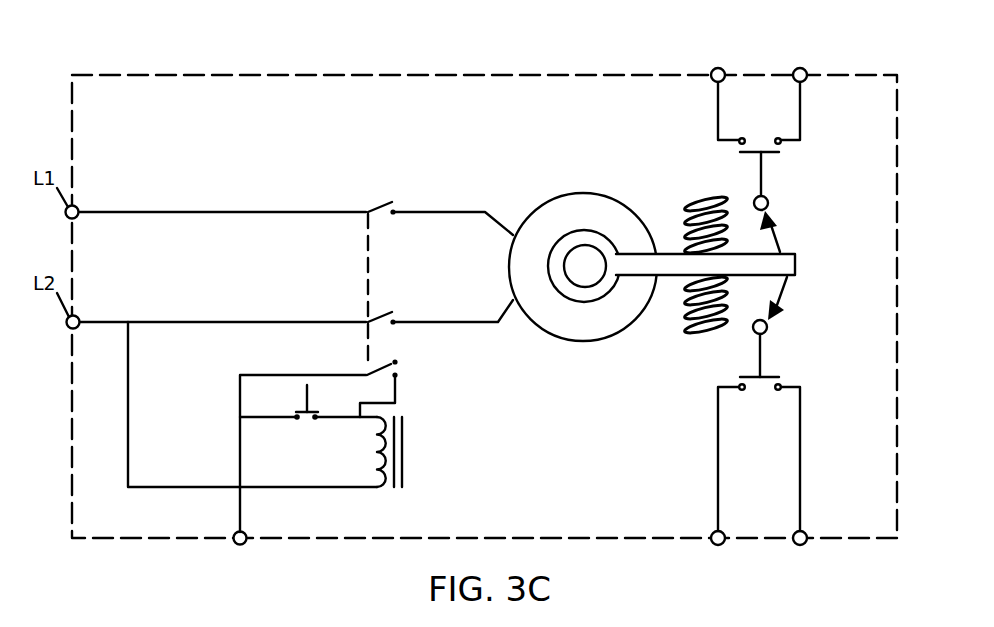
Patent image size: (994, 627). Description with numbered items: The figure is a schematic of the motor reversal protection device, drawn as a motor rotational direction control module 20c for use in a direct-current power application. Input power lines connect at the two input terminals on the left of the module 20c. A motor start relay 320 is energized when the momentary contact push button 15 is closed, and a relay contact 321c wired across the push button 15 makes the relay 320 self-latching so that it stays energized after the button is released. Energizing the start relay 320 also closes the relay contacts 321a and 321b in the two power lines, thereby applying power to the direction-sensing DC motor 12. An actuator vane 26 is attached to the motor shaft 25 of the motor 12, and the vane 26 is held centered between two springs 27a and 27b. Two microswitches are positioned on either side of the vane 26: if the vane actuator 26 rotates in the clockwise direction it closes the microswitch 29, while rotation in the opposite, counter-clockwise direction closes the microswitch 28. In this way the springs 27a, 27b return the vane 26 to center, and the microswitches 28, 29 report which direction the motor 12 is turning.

The control circuit enclosure 20c is at (100, 74).
The relay contact 321a is at (358, 212).
The relay contact 321b is at (358, 321).
The relay contact 321c is at (356, 374).
The momentary contact push button 15 is at (304, 400).
The motor start relay 320 is at (406, 440).
The direction-sensing DC motor 12 is at (562, 195).
The motor shaft 25 is at (582, 273).
The actuator vane 26 is at (680, 252).
The spring 27a is at (709, 198).
The spring 27b is at (709, 332).
The microswitch 28 is at (764, 182).
The microswitch 29 is at (763, 350).